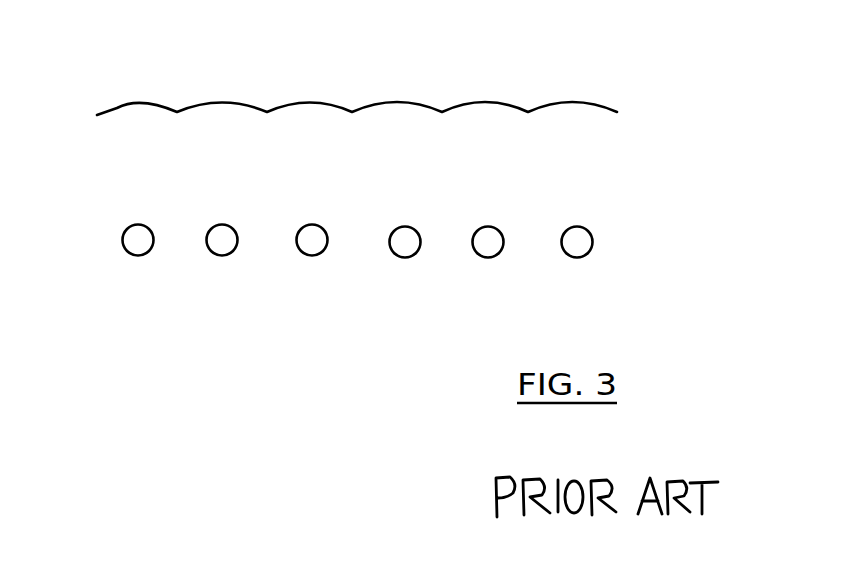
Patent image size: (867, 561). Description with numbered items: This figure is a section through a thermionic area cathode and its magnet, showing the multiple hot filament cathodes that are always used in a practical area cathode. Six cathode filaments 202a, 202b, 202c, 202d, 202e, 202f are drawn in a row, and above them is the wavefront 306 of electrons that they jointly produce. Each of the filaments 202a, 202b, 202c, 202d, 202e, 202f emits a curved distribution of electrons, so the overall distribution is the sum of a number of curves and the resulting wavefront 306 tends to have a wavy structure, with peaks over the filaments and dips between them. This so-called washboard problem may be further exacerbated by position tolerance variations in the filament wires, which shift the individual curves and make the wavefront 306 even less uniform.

The wavefront 306 is at (117, 108).
The cathode filament 202a is at (118, 223).
The cathode filament 202b is at (204, 223).
The cathode filament 202c is at (293, 223).
The cathode filament 202d is at (387, 224).
The cathode filament 202e is at (471, 224).
The cathode filament 202f is at (560, 224).